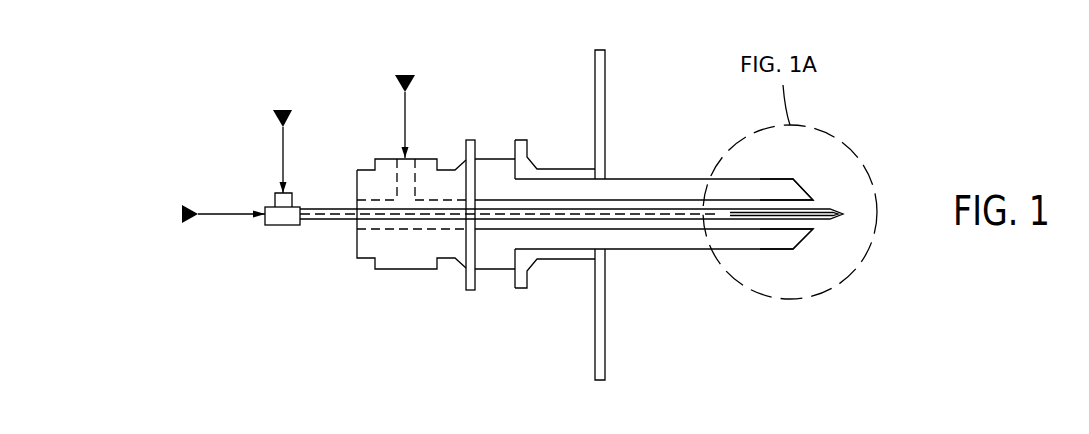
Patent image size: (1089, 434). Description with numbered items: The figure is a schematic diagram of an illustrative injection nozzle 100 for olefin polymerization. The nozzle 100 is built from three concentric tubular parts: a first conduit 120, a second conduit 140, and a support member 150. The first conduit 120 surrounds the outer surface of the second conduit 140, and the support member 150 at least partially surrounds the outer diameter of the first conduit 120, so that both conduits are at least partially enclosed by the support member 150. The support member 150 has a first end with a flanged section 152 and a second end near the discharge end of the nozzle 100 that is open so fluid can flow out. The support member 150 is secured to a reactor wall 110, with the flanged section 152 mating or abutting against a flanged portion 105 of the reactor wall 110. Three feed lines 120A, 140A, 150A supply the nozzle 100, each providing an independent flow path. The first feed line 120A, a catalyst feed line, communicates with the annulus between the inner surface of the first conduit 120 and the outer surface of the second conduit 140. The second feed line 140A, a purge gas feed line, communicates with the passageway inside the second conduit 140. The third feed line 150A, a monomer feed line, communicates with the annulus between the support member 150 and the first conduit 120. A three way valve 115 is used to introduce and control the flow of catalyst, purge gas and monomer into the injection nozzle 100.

The injection nozzle 100 is at (159, 90).
The flanged portion 105 is at (527, 262).
The reactor wall 110 is at (600, 360).
The three way valve 115 is at (402, 260).
The first conduit 120 is at (683, 221).
The first feed line 120A is at (283, 148).
The second conduit 140 is at (640, 213).
The second feed line 140A is at (227, 214).
The support member 150 is at (770, 192).
The third feed line 150A is at (403, 115).
The flanged section 152 is at (495, 165).